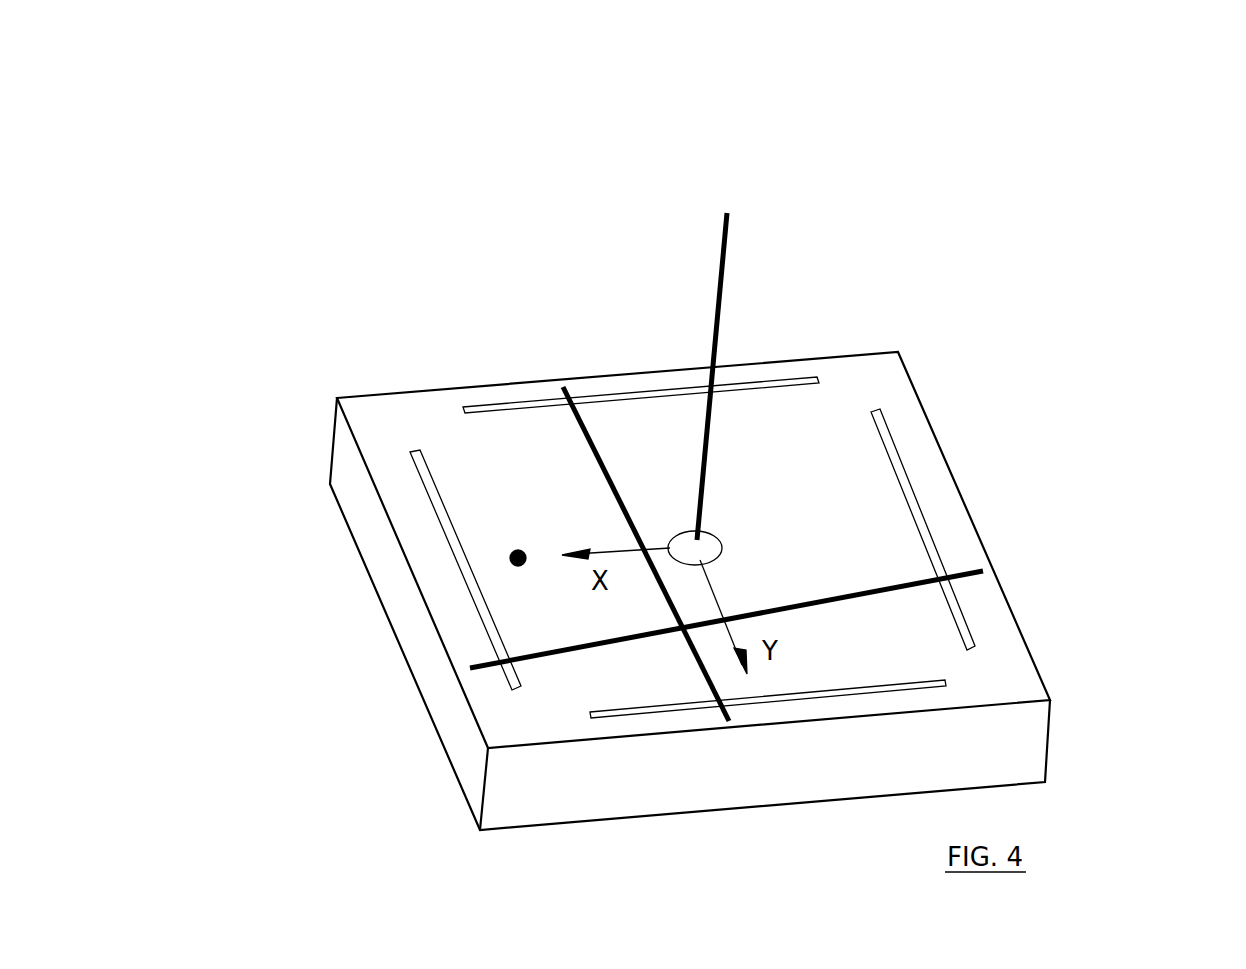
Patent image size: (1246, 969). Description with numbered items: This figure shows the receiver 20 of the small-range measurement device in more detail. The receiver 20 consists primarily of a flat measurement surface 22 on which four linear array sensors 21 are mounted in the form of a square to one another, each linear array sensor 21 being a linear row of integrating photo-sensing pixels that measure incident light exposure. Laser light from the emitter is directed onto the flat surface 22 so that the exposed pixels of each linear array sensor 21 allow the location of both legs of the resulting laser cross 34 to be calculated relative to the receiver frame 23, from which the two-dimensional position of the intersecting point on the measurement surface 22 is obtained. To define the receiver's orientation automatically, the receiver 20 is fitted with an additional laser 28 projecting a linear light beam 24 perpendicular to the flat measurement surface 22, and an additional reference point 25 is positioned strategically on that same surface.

The receiver 20 is at (1062, 92).
The linear array sensor 21 is at (640, 385).
The flat measurement surface 22 is at (580, 500).
The receiver frame 23 is at (712, 620).
The linear light beam 24 is at (723, 245).
The reference point 25 is at (510, 568).
The additional laser 28 is at (718, 532).
The laser cross 34 is at (910, 580).